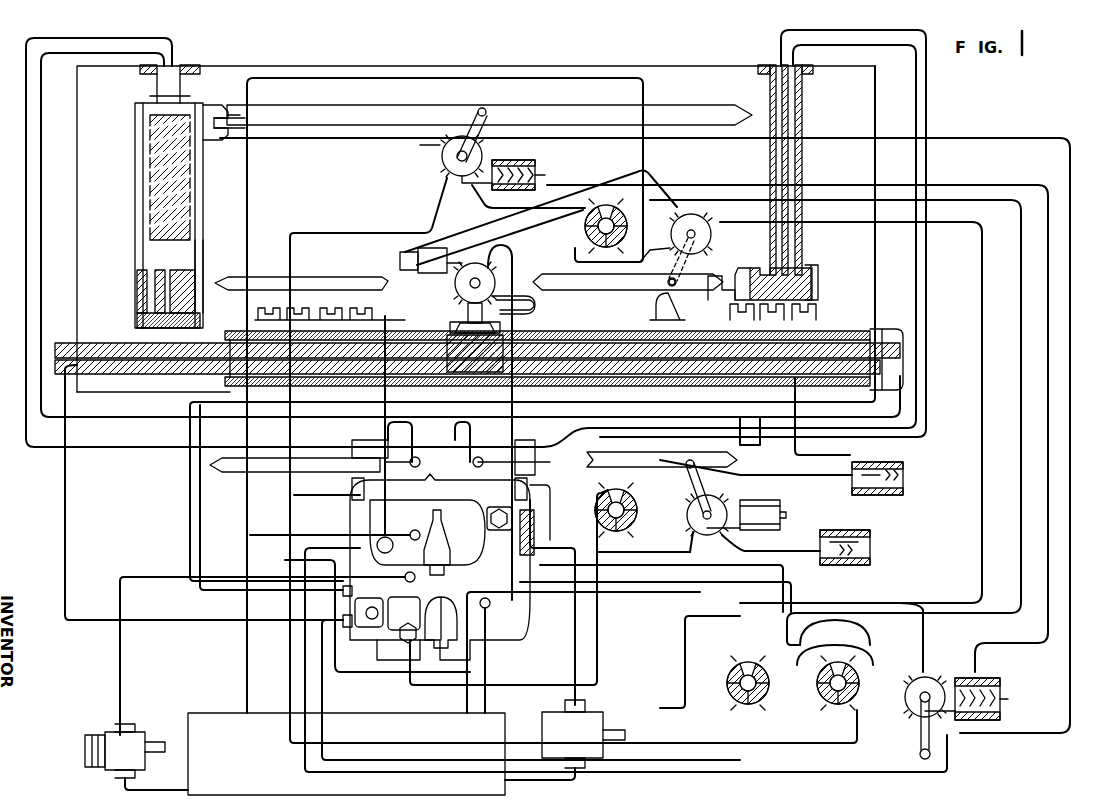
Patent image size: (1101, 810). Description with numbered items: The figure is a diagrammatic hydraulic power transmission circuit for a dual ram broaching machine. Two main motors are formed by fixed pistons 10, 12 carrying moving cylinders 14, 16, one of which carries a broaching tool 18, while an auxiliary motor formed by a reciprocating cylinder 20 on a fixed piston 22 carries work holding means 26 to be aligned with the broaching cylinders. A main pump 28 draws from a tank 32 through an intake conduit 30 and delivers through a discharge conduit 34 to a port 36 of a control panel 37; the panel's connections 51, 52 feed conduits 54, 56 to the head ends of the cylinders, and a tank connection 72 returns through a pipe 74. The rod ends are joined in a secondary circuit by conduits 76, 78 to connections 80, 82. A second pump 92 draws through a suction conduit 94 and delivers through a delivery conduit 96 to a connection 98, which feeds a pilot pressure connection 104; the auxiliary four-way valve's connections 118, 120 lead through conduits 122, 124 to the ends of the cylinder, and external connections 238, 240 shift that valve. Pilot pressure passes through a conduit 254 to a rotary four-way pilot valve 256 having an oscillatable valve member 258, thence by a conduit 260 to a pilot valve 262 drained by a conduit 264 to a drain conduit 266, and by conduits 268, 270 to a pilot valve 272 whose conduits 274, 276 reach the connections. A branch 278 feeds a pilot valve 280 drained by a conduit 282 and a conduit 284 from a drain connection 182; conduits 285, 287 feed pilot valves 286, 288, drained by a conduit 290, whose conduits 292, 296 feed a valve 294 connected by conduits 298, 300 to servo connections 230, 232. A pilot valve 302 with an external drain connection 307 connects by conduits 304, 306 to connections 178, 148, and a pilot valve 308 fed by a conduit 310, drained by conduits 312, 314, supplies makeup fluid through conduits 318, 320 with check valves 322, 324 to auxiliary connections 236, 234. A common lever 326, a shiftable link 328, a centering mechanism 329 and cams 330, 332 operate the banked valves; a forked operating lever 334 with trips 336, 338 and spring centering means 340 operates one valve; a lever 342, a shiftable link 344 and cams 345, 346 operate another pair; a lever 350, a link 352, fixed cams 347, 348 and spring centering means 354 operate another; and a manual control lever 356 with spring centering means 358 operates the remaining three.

The fixed piston 10 is at (150, 300).
The fixed piston 12 is at (812, 272).
The moving cylinder 14 is at (140, 172).
The moving cylinder 16 is at (820, 292).
The broaching tool 18 is at (162, 145).
The reciprocating cylinder 20 is at (522, 338).
The fixed piston 22 is at (880, 335).
The work holding means 26 is at (350, 304).
The main pump 28 is at (598, 722).
The intake conduit 30 is at (580, 778).
The tank 32 is at (346, 754).
The discharge conduit 34 is at (572, 612).
The port 36 is at (531, 532).
The control panel 37 is at (440, 560).
The connection 51 is at (455, 430).
The connection 52 is at (395, 435).
The conduit 54 is at (802, 122).
The conduit 56 is at (145, 318).
The tank connection 72 is at (488, 603).
The pipe 74 is at (485, 630).
The conduit 76 is at (779, 42).
The conduit 78 is at (176, 45).
The connection 80 is at (478, 460).
The connection 82 is at (418, 460).
The pump 92 is at (128, 730).
The suction conduit 94 is at (145, 788).
The delivery conduit 96 is at (122, 650).
The connection 98 is at (415, 578).
The pilot pressure connection 104 is at (408, 641).
The connection 118 is at (360, 586).
The connection 120 is at (348, 627).
The conduit 122 is at (690, 356).
The conduit 124 is at (68, 606).
The connection 148 is at (441, 648).
The connection 178 is at (352, 556).
The drain connection 182 is at (415, 530).
The connection 230 is at (358, 489).
The connection 232 is at (540, 488).
The auxiliary connection 234 is at (515, 452).
The auxiliary connection 236 is at (513, 487).
The external connection 238 is at (333, 591).
The external connection 240 is at (375, 606).
The conduit 254 is at (598, 618).
The rotary four-way pilot valve 256 is at (605, 528).
The oscillatable valve member 258 is at (595, 512).
The conduit 260 is at (380, 230).
The pilot valve 262 is at (445, 155).
The conduit 264 is at (352, 144).
The drain conduit 266 is at (249, 232).
The conduit 268 is at (690, 188).
The conduit 270 is at (715, 141).
The pilot valve 272 is at (858, 700).
The conduit 274 is at (320, 664).
The conduit 276 is at (862, 665).
The branch conduit 278 is at (514, 253).
The pilot valve 280 is at (497, 275).
The conduit 282 is at (536, 304).
The conduit 284 is at (335, 540).
The conduit 285 is at (545, 210).
The pilot valve 286 is at (603, 224).
The conduit 287 is at (632, 170).
The pilot valve 288 is at (713, 238).
The conduit 290 is at (249, 103).
The conduit 292 is at (982, 270).
The valve 294 is at (768, 700).
The conduit 296 is at (870, 202).
The conduit 298 is at (288, 503).
The conduit 300 is at (778, 648).
The pilot valve 302 is at (936, 680).
The conduit 304 is at (312, 555).
The conduit 306 is at (660, 634).
The external drain connection 307 is at (921, 668).
The pilot valve 308 is at (714, 495).
The conduit 310 is at (692, 550).
The conduit 312 is at (670, 566).
The conduit 314 is at (927, 598).
The conduit 318 is at (845, 518).
The conduit 320 is at (860, 455).
The check valve 322 is at (870, 547).
The check valve 324 is at (904, 474).
The common lever 326 is at (690, 470).
The shiftable link 328 is at (662, 458).
The centering mechanism 329 is at (782, 512).
The cam 330 is at (205, 290).
The cam 332 is at (748, 450).
The forked operating lever 334 is at (468, 302).
The trip 336 is at (525, 312).
The trip 338 is at (648, 311).
The spring centering means 340 is at (403, 258).
The lever 342 is at (680, 272).
The shiftable link 344 is at (628, 281).
The cam 345 is at (220, 138).
The cam 346 is at (725, 296).
The fixed cam 347 is at (208, 108).
The fixed cam 348 is at (748, 275).
The lever 350 is at (475, 112).
The link 352 is at (365, 110).
The spring centering means 354 is at (517, 165).
The manual control lever 356 is at (919, 755).
The spring centering means 358 is at (1002, 702).